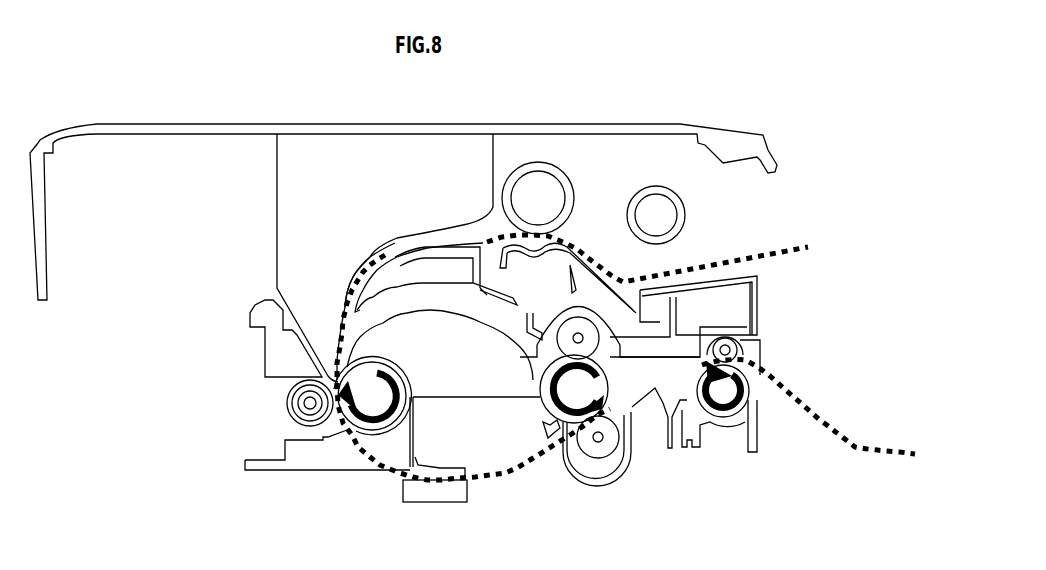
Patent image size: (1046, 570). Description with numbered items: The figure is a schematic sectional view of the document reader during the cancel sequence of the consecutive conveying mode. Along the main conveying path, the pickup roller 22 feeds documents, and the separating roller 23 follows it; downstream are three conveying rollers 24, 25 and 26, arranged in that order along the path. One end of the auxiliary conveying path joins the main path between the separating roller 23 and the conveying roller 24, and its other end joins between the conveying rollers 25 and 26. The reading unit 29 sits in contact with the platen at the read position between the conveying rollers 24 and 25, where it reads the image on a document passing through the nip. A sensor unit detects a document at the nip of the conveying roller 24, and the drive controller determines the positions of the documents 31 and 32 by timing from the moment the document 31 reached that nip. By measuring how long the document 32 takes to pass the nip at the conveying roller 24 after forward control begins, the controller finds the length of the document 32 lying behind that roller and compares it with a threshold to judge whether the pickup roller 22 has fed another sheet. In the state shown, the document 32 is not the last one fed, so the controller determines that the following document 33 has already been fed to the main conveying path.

The pickup roller 22 is at (628, 215).
The separating roller 23 is at (571, 199).
The conveying roller 24 is at (362, 430).
The conveying roller 25 is at (572, 432).
The conveying roller 26 is at (760, 395).
The reading unit 29 is at (418, 502).
The document 31 is at (858, 445).
The document 32 is at (395, 243).
The following document 33 is at (697, 270).